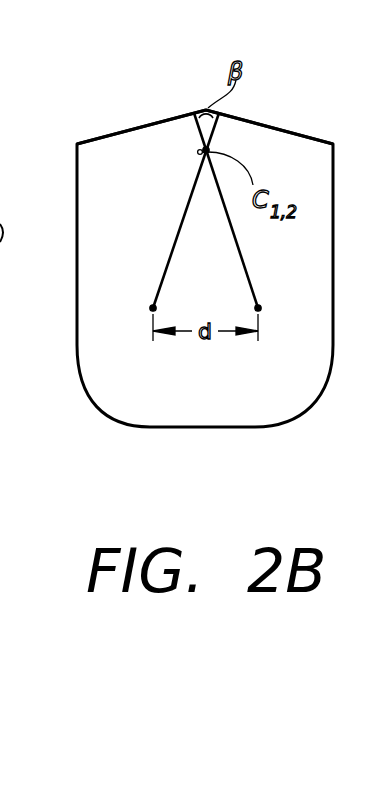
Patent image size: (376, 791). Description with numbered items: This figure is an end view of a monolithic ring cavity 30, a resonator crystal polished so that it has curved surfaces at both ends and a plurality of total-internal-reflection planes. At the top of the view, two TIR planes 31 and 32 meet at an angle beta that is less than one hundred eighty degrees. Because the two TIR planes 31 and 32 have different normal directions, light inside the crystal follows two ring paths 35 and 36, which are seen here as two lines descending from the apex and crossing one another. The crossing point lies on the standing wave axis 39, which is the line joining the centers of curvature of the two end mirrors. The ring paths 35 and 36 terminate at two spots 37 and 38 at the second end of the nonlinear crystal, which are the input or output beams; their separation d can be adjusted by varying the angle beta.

The monolithic ring cavity 30 is at (172, 92).
The TIR plane 31 is at (95, 138).
The TIR plane 32 is at (313, 138).
The ring path 35 is at (246, 268).
The ring path 36 is at (166, 267).
The spot 37 is at (261, 307).
The spot 38 is at (150, 307).
The standing wave axis 39 is at (198, 152).